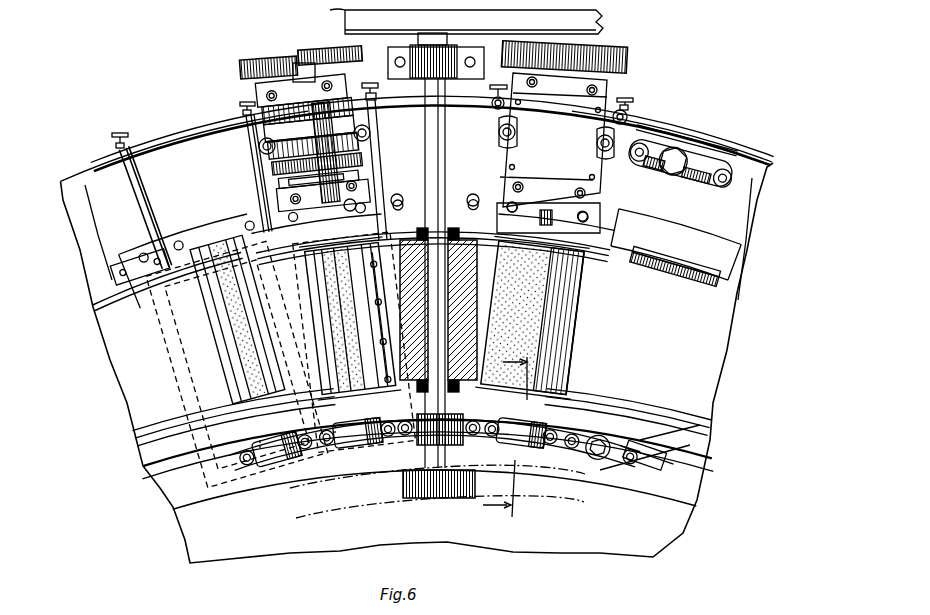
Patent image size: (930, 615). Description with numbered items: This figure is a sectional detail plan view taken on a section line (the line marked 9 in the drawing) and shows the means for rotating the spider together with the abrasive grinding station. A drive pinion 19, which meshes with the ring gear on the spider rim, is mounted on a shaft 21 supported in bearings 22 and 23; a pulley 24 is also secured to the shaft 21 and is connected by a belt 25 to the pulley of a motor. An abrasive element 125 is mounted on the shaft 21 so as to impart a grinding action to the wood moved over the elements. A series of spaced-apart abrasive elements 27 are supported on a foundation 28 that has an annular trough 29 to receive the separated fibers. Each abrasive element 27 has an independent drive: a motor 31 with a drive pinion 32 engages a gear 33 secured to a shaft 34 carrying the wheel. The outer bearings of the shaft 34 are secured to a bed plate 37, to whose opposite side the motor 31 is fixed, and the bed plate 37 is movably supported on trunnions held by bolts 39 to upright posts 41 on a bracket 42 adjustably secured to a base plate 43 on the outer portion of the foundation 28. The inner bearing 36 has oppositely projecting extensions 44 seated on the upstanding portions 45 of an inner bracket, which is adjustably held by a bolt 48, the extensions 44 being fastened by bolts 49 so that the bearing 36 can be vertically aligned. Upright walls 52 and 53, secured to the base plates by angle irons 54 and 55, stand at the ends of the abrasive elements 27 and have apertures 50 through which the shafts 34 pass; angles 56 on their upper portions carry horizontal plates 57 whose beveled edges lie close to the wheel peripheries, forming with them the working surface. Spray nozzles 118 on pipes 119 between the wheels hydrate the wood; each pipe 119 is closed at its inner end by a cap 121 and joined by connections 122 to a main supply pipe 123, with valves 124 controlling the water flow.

The section line 9 is at (511, 436).
The drive pinion 19 is at (427, 500).
The shaft 21 is at (450, 186).
The bearing 22 is at (428, 432).
The bearing 23 is at (418, 58).
The pulley 24 is at (330, 10).
The belt 25 is at (604, 22).
The abrasive element 27 is at (215, 380).
The foundation 28 is at (95, 270).
The annular trough 29 is at (135, 385).
The motor 31 is at (262, 98).
The drive pinion 32 is at (312, 50).
The gear 33 is at (252, 58).
The shaft 34 is at (282, 200).
The inner bearing 36 is at (275, 470).
The bed plate 37 is at (362, 185).
The bolt 39 is at (258, 153).
The upright post 41 is at (645, 140).
The bracket 42 is at (700, 142).
The base plate 43 is at (110, 246).
The extension 44 is at (270, 458).
The upstanding portion 45 is at (602, 466).
The bolt 48 is at (650, 416).
The bolt 49 is at (248, 467).
The aperture 50 is at (470, 200).
The upright wall 52 is at (682, 262).
The upright wall 53 is at (660, 425).
The angle iron 54 is at (116, 258).
The angle iron 55 is at (650, 444).
The angle 56 is at (136, 256).
The plate 57 is at (270, 338).
The spray nozzle 118 is at (390, 257).
The pipe 119 is at (390, 297).
The cap 121 is at (238, 465).
The connection 122 is at (240, 147).
The main supply pipe 123 is at (176, 130).
The valve 124 is at (124, 132).
The abrasive element 125 is at (470, 278).